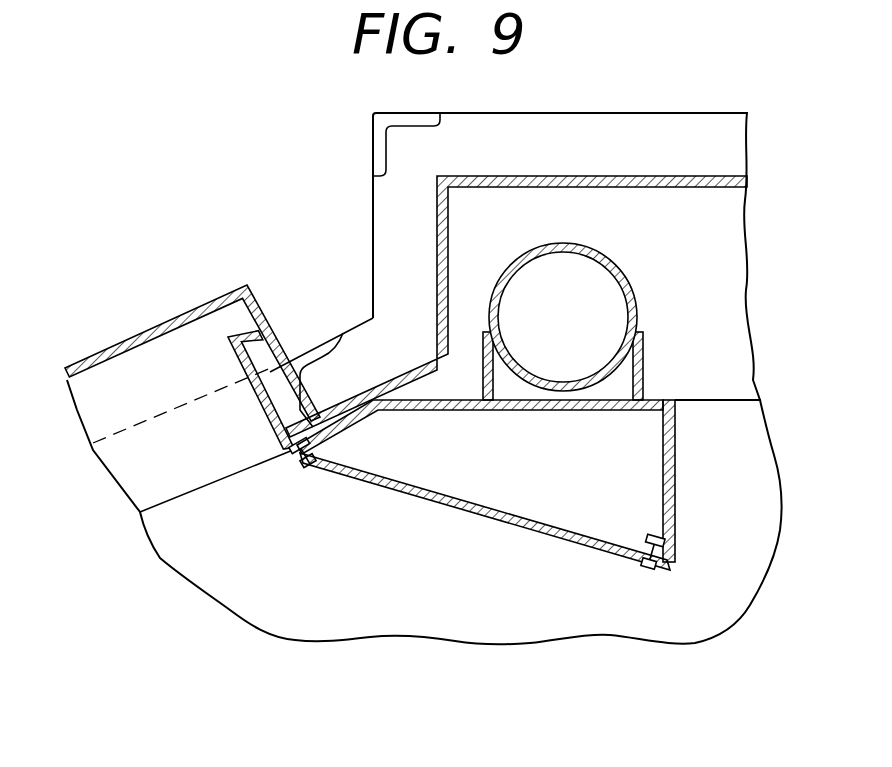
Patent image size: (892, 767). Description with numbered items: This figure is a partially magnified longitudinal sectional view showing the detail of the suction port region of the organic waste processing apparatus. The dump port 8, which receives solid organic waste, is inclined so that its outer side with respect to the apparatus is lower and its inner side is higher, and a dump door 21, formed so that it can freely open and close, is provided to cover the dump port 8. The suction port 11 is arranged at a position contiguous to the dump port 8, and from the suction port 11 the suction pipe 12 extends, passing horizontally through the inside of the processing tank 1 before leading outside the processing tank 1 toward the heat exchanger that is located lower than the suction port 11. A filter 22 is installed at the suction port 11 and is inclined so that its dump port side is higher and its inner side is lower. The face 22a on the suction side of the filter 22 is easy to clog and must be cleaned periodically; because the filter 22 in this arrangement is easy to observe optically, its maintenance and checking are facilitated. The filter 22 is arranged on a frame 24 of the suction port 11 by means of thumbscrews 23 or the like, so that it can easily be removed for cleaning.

The processing tank 1 is at (533, 628).
The dump port 8 is at (192, 478).
The suction port 11 is at (587, 513).
The suction pipe 12 is at (537, 280).
The dump door 21 is at (155, 348).
The filter 22 is at (423, 503).
The face on the suction side of the filter 22a is at (477, 517).
The thumbscrews 23 is at (310, 478).
The frame of the suction port 24 is at (675, 487).